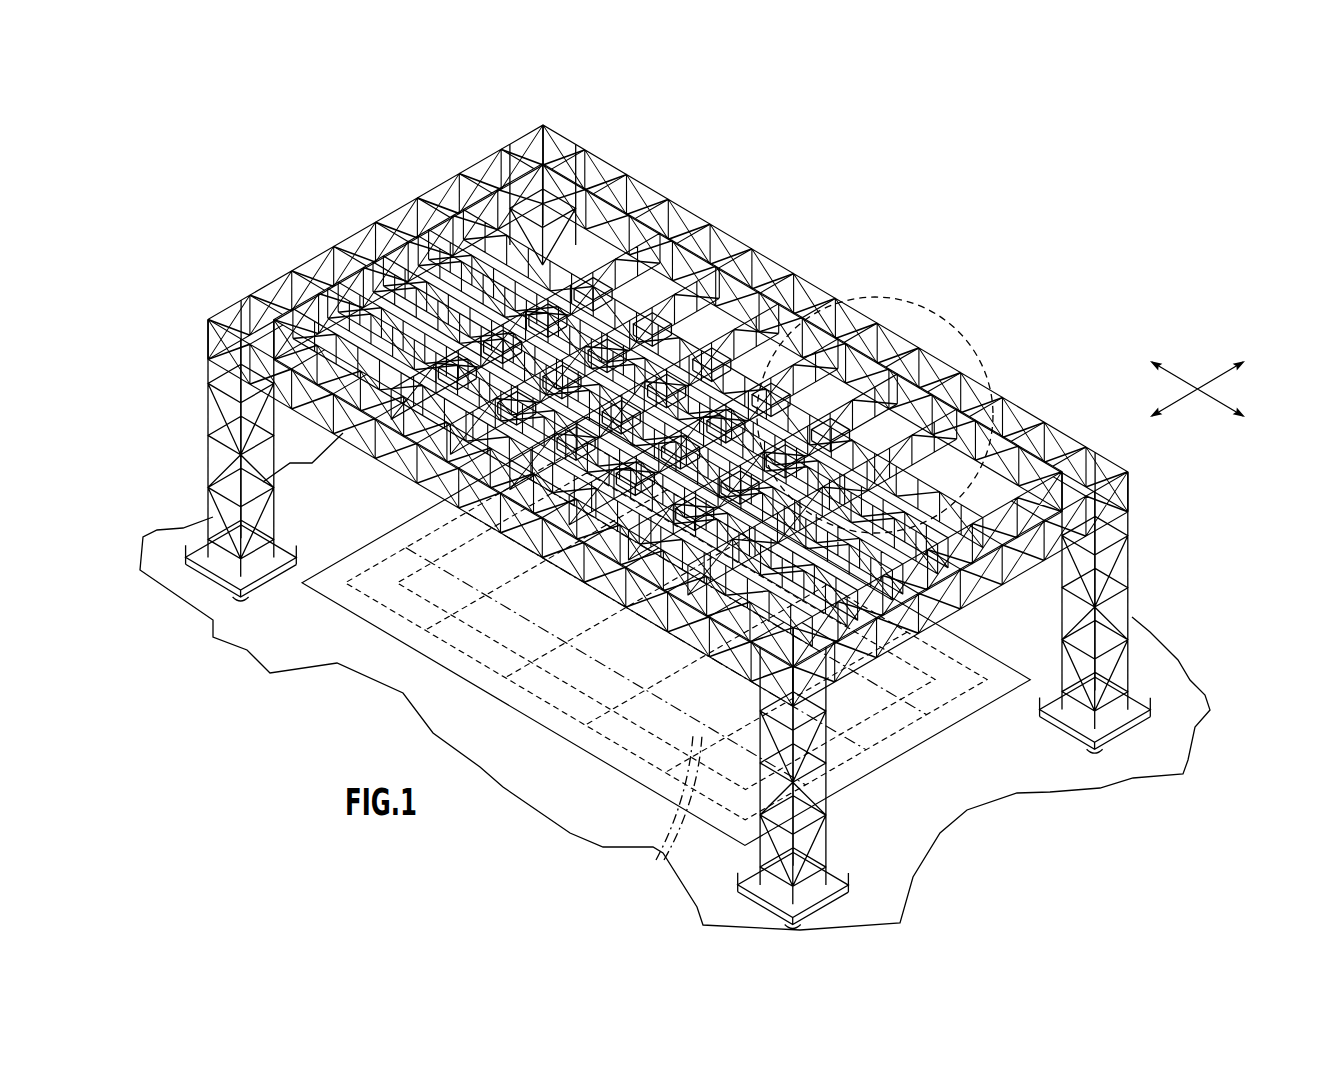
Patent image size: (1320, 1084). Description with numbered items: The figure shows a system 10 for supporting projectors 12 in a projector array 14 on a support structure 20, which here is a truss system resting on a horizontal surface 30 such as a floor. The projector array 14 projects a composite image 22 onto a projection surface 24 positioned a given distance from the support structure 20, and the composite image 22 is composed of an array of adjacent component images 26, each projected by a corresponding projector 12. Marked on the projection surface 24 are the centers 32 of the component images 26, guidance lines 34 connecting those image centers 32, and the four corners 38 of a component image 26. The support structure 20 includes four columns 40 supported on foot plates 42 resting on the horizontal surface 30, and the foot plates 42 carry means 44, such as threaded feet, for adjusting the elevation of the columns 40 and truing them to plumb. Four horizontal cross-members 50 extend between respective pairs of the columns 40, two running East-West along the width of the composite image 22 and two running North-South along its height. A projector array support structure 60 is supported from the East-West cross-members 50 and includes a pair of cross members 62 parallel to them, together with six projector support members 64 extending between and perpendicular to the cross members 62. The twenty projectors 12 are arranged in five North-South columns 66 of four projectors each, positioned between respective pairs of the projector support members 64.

The system 10 is at (885, 182).
The projector 12 is at (853, 440).
The projector array 14 is at (495, 281).
The support structure 20 is at (660, 198).
The composite image 22 is at (666, 631).
The projection surface 24 is at (666, 631).
The component image 26 is at (666, 630).
The horizontal surface 30 is at (965, 828).
The centers of the component images 32 is at (648, 755).
The guidance lines 34 is at (665, 808).
The corners of the component image 38 is at (666, 631).
The column 40 is at (212, 423).
The foot plate 42 is at (228, 563).
The means for adjusting elevation 44 is at (196, 550).
The horizontal cross-member 50 is at (317, 253).
The projector array support structure 60 is at (450, 320).
The cross member 62 is at (477, 517).
The projector support member 64 is at (507, 287).
The column of projectors 66 is at (738, 216).